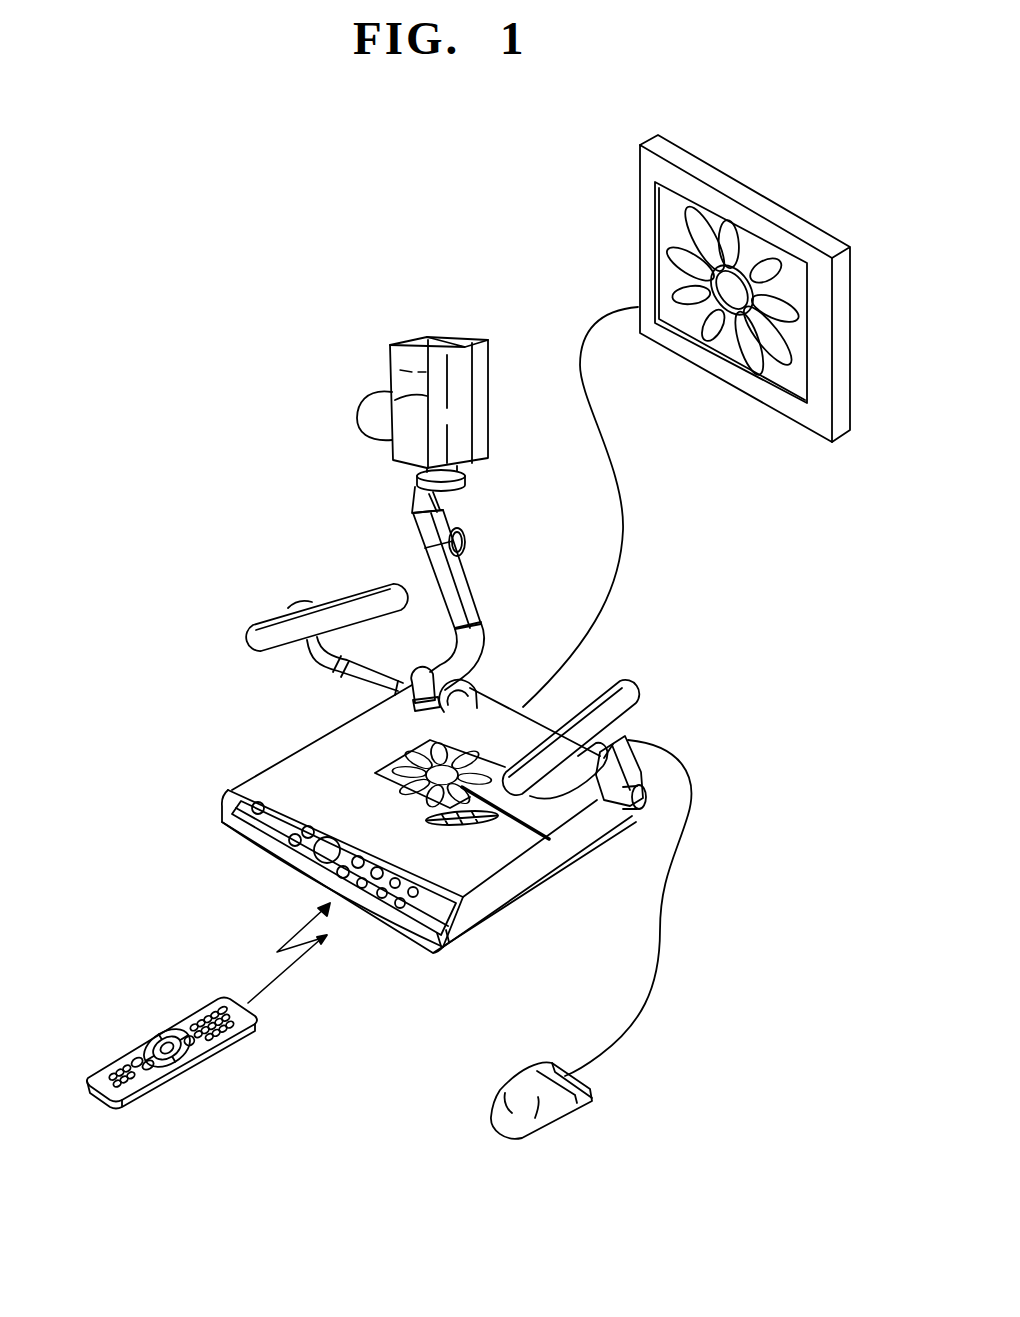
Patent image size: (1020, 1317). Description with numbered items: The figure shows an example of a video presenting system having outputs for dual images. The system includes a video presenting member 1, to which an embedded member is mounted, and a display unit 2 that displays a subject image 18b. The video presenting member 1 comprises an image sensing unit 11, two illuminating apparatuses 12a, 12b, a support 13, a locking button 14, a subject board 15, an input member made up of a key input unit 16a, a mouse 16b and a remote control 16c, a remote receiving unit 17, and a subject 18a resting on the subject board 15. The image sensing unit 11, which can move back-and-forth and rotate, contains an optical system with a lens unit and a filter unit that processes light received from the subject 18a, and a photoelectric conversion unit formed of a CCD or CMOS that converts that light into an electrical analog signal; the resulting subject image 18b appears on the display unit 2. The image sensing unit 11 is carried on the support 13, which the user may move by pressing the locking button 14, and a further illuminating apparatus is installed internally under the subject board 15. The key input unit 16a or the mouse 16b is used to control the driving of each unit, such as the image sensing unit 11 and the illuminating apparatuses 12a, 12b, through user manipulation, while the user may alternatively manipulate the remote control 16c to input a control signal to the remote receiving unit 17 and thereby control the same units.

The video presenting member 1 is at (282, 380).
The display unit 2 is at (752, 201).
The image sensing unit 11 is at (413, 381).
The illuminating apparatus 12a is at (265, 625).
The illuminating apparatus 12b is at (640, 698).
The support 13 is at (469, 601).
The locking button 14 is at (467, 693).
The subject board 15 is at (493, 860).
The key input unit 16a is at (247, 795).
The mouse 16b is at (498, 1106).
The remote control 16c is at (100, 1090).
The remote receiving unit 17 is at (343, 914).
The subject 18a is at (373, 777).
The subject image 18b is at (779, 378).